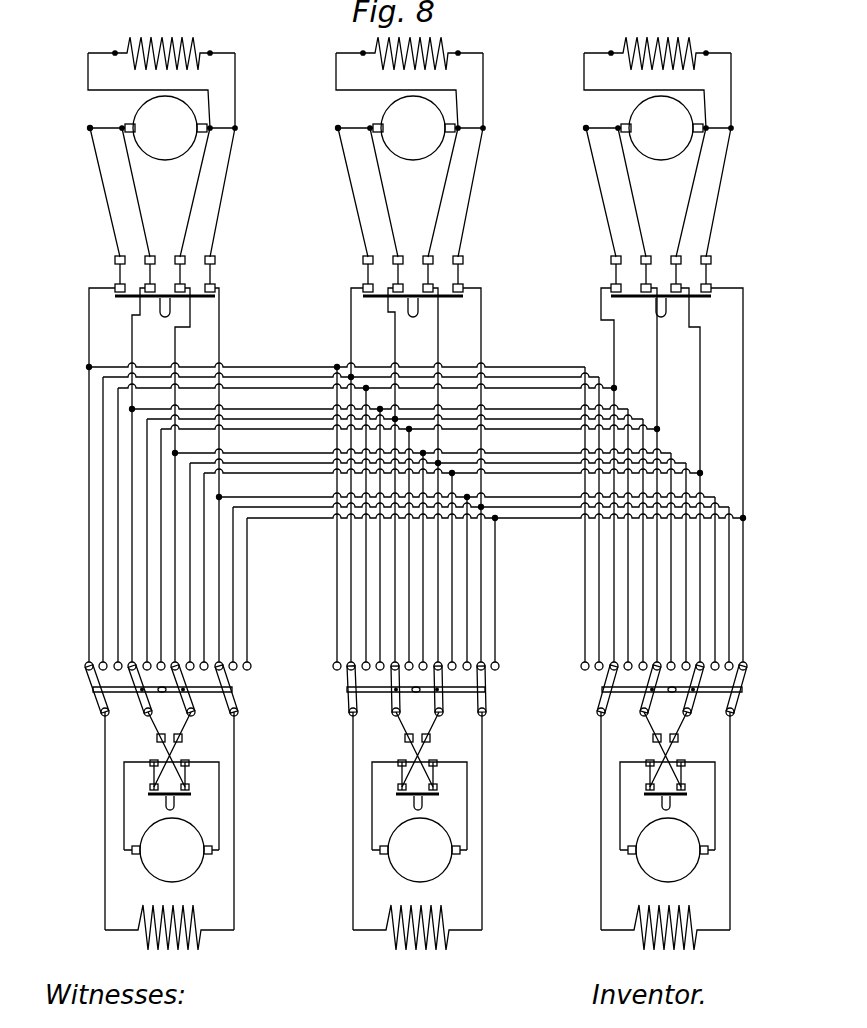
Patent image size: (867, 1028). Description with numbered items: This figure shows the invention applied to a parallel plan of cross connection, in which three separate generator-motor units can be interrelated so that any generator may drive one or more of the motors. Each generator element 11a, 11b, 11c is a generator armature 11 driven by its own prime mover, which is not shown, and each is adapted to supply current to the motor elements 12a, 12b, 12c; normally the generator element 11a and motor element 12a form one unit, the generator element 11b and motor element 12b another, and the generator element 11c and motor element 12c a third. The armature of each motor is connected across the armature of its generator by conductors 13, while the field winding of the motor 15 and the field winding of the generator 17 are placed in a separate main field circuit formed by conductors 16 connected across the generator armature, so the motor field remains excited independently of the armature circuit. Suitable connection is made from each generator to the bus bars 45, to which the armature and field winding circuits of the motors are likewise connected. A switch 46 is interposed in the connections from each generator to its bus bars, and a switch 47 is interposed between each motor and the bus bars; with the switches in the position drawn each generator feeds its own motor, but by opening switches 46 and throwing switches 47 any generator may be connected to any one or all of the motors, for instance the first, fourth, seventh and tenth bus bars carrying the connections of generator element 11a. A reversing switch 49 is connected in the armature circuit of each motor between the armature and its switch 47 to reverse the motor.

The field winding of the generator 17 is at (189, 46).
The generator armature 11 is at (169, 157).
The generator element 11a is at (65, 131).
The generator element 11b is at (320, 127).
The generator element 11c is at (567, 124).
The conductors 16 is at (103, 188).
The conductors 13 is at (128, 168).
The switch 46 is at (216, 279).
The bus bars 45 is at (268, 377).
The switch 47 is at (237, 702).
The reversing switch 49 is at (181, 801).
The motor element 12a is at (128, 850).
The motor element 12b is at (381, 850).
The motor element 12c is at (630, 850).
The field winding of the motor 15 is at (200, 942).